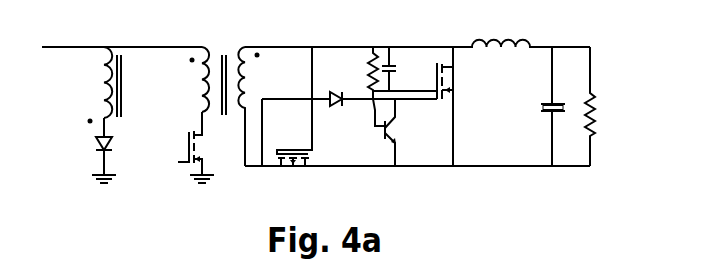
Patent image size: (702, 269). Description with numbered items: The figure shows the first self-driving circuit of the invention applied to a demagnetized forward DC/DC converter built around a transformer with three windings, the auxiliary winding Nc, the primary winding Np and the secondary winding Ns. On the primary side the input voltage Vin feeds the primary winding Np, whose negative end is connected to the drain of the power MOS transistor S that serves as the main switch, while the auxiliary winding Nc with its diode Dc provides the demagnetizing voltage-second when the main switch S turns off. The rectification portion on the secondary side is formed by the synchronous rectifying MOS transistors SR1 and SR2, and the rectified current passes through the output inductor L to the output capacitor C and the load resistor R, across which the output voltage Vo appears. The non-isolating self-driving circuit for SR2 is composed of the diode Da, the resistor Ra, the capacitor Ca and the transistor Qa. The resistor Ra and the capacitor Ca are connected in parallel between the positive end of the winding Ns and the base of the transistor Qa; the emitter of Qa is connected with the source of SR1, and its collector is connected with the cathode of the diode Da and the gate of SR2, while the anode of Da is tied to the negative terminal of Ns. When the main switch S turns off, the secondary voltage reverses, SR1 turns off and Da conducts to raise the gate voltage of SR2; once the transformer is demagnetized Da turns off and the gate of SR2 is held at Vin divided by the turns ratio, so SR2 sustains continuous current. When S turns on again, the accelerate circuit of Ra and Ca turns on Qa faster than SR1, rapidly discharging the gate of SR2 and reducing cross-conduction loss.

The input voltage Vin is at (122, 31).
The auxiliary winding Nc is at (96, 85).
The demagnetizing diode Dc is at (117, 150).
The primary winding Np is at (197, 81).
The power MOS transistor S is at (200, 147).
The secondary winding Ns is at (414, 106).
The synchronous rectifying MOS transistor SR1 is at (287, 121).
The diode Da is at (349, 112).
The resistor Ra is at (389, 86).
The capacitor Ca is at (400, 69).
The transistor Qa is at (404, 132).
The synchronous rectifying MOS transistor SR2 is at (467, 106).
The output inductor L is at (521, 30).
The output voltage Vo is at (578, 33).
The output capacitor C is at (543, 106).
The load resistor R is at (601, 106).